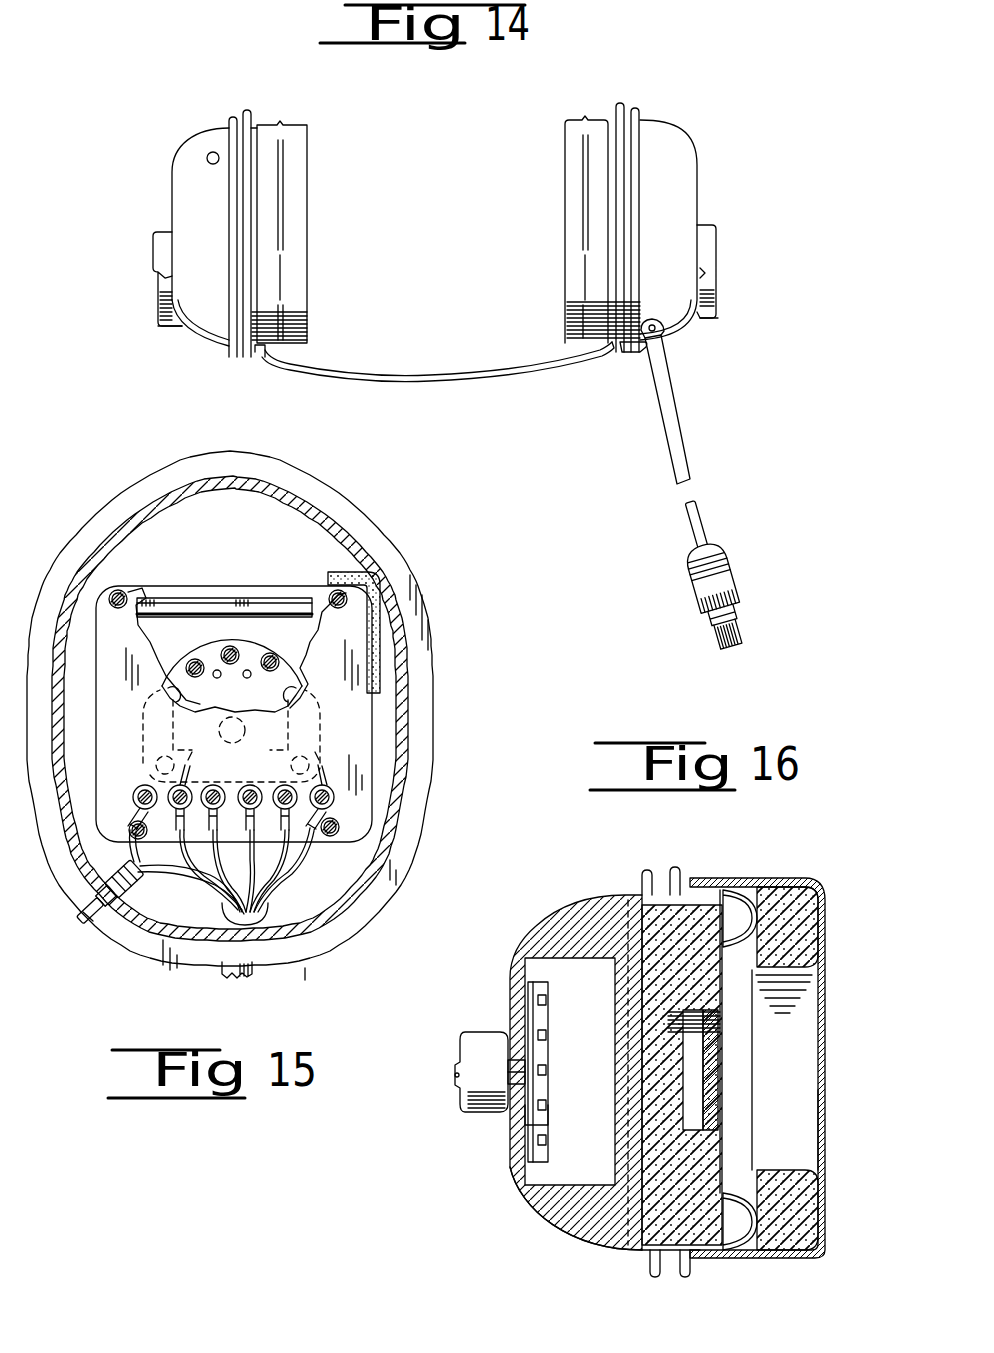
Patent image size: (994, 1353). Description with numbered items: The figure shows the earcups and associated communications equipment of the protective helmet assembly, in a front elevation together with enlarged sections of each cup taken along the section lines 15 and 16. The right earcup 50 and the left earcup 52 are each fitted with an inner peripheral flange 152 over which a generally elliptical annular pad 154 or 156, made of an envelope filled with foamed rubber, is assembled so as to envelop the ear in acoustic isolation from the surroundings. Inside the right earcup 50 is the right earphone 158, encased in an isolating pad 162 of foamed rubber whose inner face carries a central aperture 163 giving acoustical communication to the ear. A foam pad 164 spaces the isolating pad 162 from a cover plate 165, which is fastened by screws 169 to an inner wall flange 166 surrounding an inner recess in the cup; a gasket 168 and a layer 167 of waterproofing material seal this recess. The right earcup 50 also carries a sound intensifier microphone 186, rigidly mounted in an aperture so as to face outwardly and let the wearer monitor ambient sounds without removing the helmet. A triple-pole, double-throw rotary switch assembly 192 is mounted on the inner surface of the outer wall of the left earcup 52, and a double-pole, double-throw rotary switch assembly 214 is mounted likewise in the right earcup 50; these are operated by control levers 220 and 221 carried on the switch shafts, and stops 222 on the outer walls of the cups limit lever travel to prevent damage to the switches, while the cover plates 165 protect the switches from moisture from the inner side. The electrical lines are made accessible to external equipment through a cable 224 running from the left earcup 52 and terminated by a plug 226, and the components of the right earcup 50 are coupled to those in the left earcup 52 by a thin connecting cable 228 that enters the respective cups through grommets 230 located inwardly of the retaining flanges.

In FIG. 14, the right earcup 50 is at (180, 162).
In FIG. 14, the left earcup 52 is at (660, 137).
In FIG. 14, the sound intensifier microphone 186 is at (210, 152).
In FIG. 14, the annular pad 154 is at (300, 165).
In FIG. 16, the annular pad 154 is at (812, 1226).
In FIG. 14, the annular pad 156 is at (572, 170).
In FIG. 14, the section line 16- 16 is at (121, 250).
In FIG. 14, the section line 15- 15 is at (640, 41).
In FIG. 14, the stops 222 is at (167, 277).
In FIG. 14, the control lever 220 is at (180, 325).
In FIG. 16, the control lever 220 is at (465, 1113).
In FIG. 14, the control lever 221 is at (712, 318).
In FIG. 14, the grommets 230 is at (268, 357).
In FIG. 15, the grommets 230 is at (97, 888).
In FIG. 14, the connecting cable 228 is at (383, 378).
In FIG. 15, the connecting cable 228 is at (87, 923).
In FIG. 14, the cable 224 is at (685, 452).
In FIG. 15, the cable 224 is at (243, 975).
In FIG. 14, the plug 226 is at (732, 578).
In FIG. 15, the screws 169 is at (117, 585).
In FIG. 15, the cover plate 165 is at (137, 650).
In FIG. 16, the cover plate 165 is at (613, 1032).
In FIG. 15, the rotary switch assembly 192 is at (265, 642).
In FIG. 15, the waterproofing layer 167 is at (360, 578).
In FIG. 16, the waterproofing layer 167 is at (645, 1233).
In FIG. 16, the foam pad 164 is at (633, 898).
In FIG. 16, the isolating pad 162 is at (717, 898).
In FIG. 16, the inner peripheral flange 152 is at (775, 888).
In FIG. 16, the inner wall flange 166 is at (587, 947).
In FIG. 16, the central aperture 163 is at (720, 1055).
In FIG. 16, the right earphone 158 is at (725, 1082).
In FIG. 16, the rotary switch assembly 214 is at (563, 1104).
In FIG. 16, the gasket 168 is at (610, 1207).